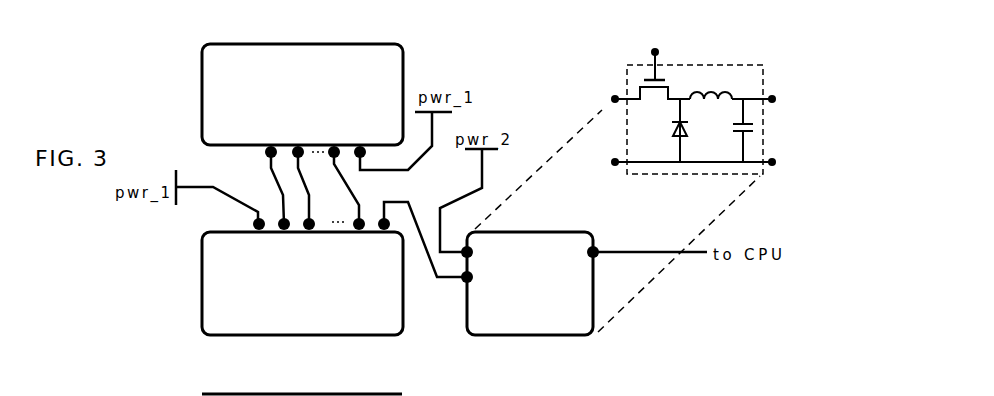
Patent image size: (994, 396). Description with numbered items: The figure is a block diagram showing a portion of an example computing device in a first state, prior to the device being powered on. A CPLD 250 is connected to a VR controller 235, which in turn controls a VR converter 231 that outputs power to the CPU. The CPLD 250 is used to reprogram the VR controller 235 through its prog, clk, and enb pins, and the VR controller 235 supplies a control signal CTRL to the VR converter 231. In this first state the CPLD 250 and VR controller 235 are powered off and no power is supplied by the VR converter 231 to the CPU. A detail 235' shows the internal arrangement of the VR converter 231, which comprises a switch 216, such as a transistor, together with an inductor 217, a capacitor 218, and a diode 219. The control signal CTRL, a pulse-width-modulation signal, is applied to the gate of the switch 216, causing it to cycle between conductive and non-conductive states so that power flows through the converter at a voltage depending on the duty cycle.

The CPLD 250 is at (202, 60).
The VR controller 235 is at (262, 276).
The VR converter 231 is at (593, 296).
The detail 235' is at (696, 121).
The switch 216 is at (640, 86).
The inductor 217 is at (697, 92).
The capacitor 218 is at (752, 122).
The diode 219 is at (685, 135).